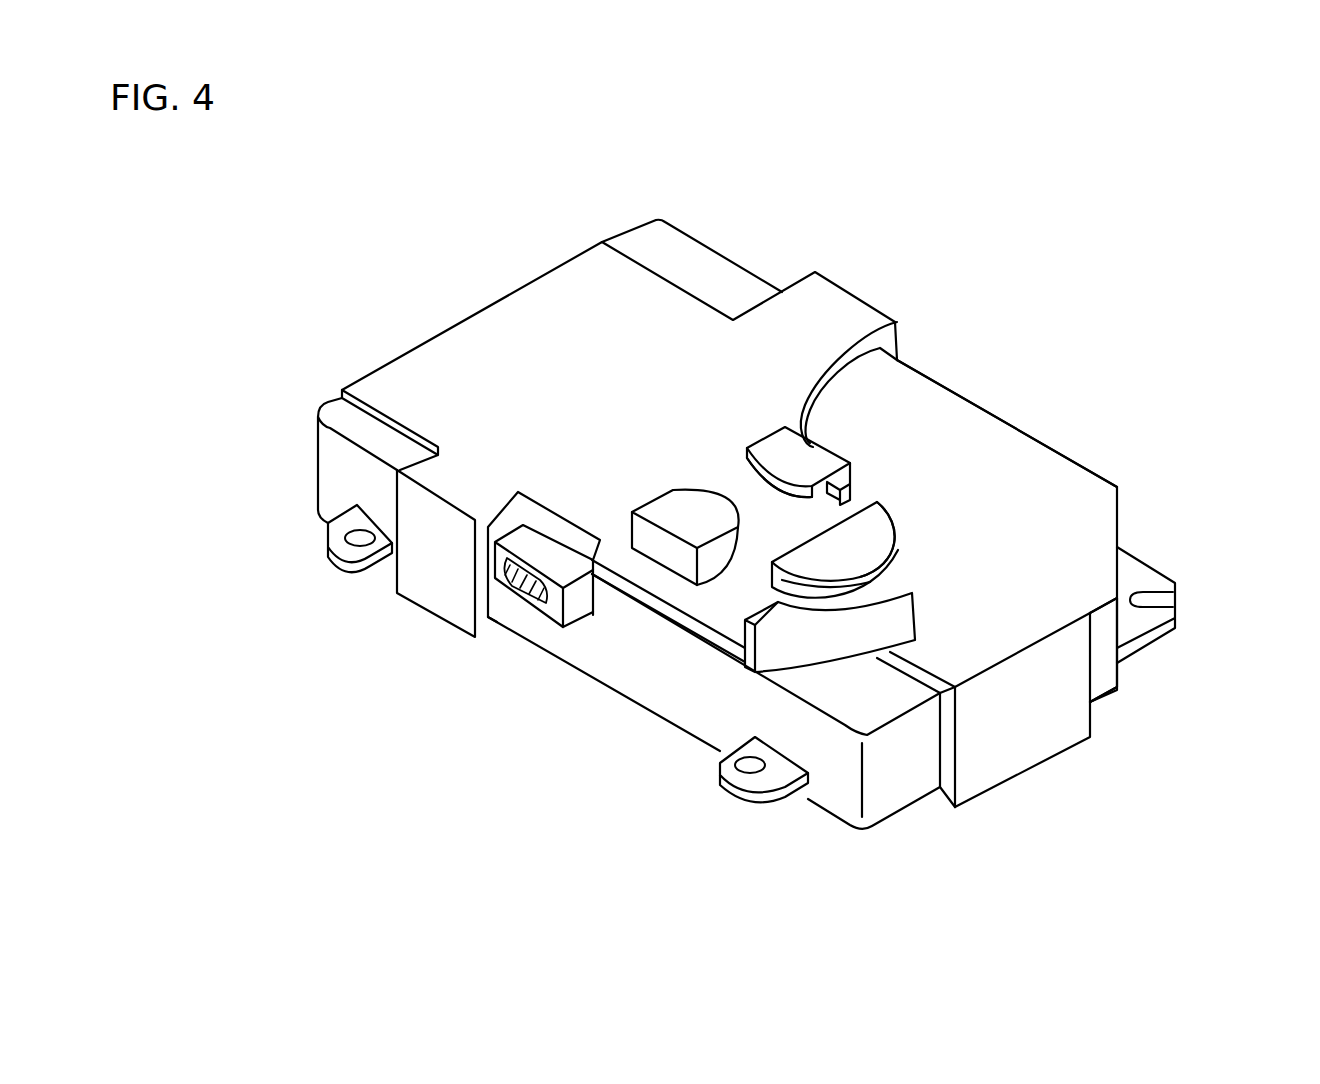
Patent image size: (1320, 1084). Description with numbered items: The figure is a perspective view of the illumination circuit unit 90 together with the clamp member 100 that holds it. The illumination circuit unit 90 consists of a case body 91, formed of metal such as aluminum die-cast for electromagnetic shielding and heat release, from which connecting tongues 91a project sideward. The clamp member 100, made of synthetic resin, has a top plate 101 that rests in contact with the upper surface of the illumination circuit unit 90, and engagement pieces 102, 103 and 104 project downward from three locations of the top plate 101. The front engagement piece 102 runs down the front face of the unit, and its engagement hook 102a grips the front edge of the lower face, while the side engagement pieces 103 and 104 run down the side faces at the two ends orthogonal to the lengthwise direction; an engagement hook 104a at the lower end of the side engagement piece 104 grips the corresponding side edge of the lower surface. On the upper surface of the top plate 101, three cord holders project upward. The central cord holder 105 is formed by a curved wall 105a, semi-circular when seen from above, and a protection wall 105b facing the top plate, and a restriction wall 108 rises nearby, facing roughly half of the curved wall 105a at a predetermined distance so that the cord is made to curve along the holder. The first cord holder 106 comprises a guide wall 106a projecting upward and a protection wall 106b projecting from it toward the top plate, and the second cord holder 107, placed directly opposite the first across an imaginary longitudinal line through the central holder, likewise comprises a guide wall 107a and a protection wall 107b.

The illumination circuit unit 90 is at (712, 278).
The case body 91 is at (1023, 437).
The connecting tongues 91a is at (355, 562).
The clamp member 100 is at (490, 297).
The top plate 101 is at (440, 363).
The front engagement piece 102 is at (1035, 742).
The engagement hook 102a is at (940, 790).
The side engagement piece 103 is at (903, 338).
The side engagement piece 104 is at (443, 582).
The engagement hook 104a is at (492, 623).
The central cord holder 105 is at (877, 533).
The curved wall 105a is at (843, 605).
The protection wall 105b is at (860, 590).
The first cord holder 106 is at (655, 543).
The guide wall 106a is at (742, 575).
The protection wall 106b is at (690, 515).
The second cord holder 107 is at (815, 450).
The guide wall 107a is at (850, 492).
The protection wall 107b is at (780, 487).
The restriction wall 108 is at (905, 620).